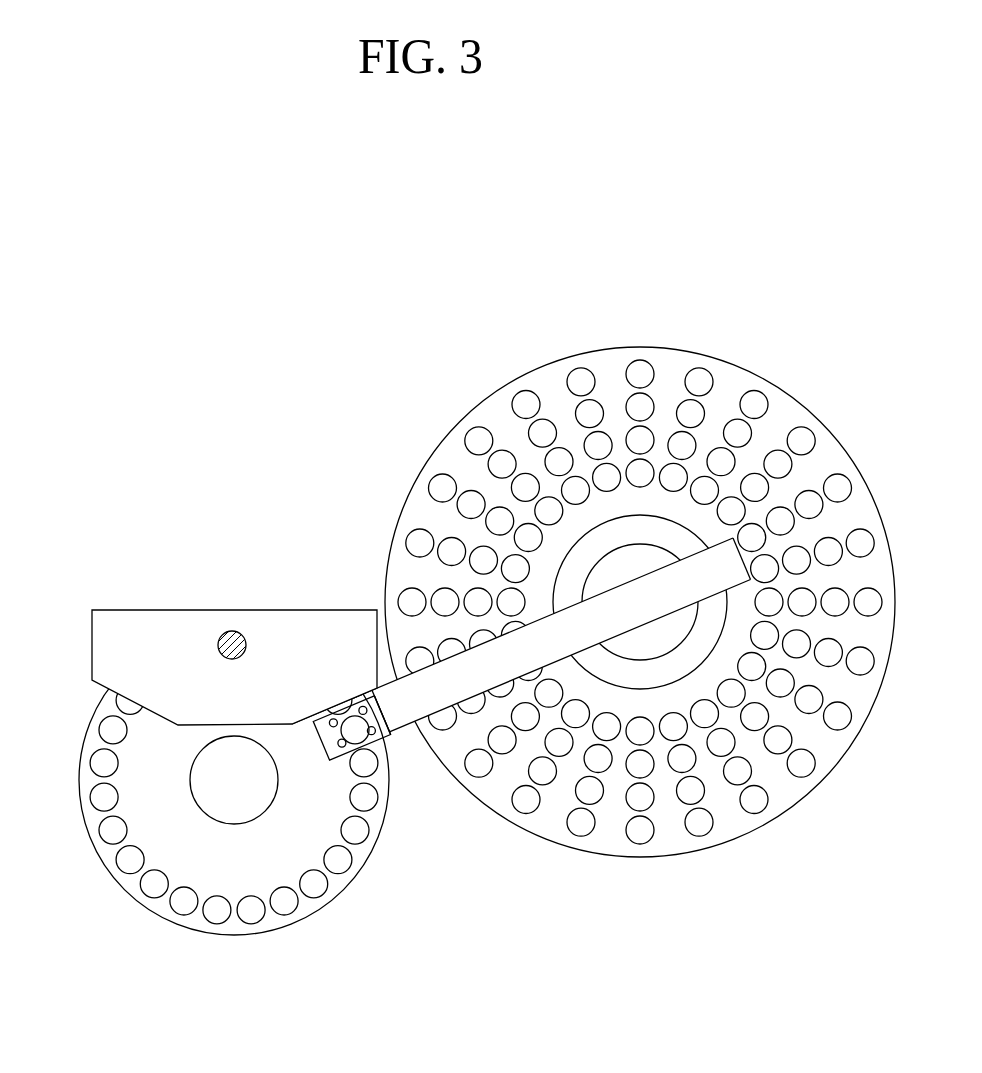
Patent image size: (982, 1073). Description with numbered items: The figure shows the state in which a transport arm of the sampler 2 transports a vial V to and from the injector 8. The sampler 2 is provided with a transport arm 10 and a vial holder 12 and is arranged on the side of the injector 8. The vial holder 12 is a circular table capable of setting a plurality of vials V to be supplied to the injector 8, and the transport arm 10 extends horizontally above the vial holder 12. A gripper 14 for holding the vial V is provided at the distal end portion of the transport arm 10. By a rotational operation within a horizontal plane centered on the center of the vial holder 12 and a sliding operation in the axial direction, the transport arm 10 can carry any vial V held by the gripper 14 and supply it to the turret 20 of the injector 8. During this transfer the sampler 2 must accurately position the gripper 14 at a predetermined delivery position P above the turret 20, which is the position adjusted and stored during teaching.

The sampler 2 is at (639, 333).
The vial V is at (714, 367).
The vial holder 12 is at (791, 394).
The transport arm 10 is at (562, 650).
The gripper 14 is at (353, 738).
The delivery position P is at (393, 733).
The turret 20 is at (103, 857).
The injector 8 is at (78, 721).